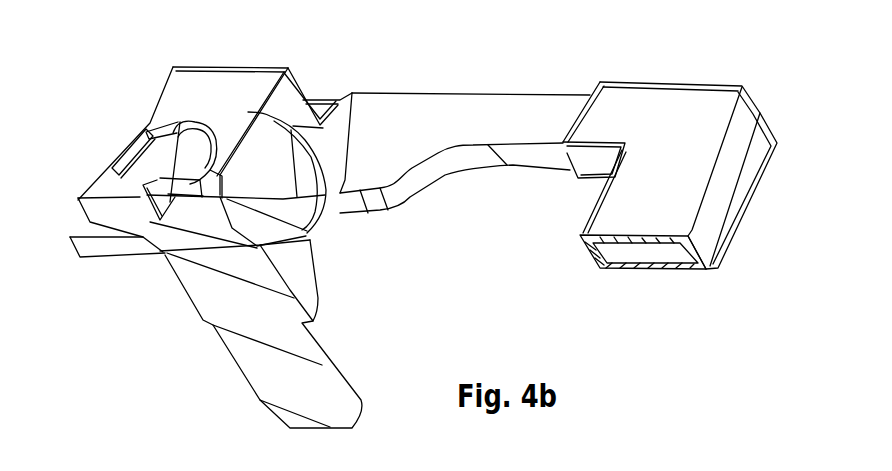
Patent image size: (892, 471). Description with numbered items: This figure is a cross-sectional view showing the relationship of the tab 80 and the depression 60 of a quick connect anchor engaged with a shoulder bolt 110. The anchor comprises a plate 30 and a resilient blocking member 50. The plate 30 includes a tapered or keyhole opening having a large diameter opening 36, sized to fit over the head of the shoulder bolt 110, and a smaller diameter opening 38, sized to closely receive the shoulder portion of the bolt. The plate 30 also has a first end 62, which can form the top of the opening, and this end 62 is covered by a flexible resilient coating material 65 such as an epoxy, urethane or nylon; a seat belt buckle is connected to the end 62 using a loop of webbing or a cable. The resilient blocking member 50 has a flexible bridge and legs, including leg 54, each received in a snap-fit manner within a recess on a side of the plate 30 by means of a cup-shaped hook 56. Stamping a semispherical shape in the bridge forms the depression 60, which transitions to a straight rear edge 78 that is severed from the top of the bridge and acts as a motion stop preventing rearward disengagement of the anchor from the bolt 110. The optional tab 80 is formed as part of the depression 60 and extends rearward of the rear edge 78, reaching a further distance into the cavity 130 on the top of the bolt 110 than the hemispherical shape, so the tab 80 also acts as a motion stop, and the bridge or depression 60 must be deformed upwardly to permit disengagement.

The plate 30 is at (414, 86).
The large diameter opening 36 is at (491, 143).
The smaller diameter opening 38 is at (352, 93).
The resilient blocking member 50 is at (157, 66).
The leg 54 is at (288, 66).
The cup-shaped hook 56 is at (321, 98).
The depression 60 is at (165, 257).
The first end 62 is at (652, 258).
The flexible resilient coating material 65 is at (638, 100).
The rear edge 78 is at (172, 145).
The tab 80 is at (125, 225).
The shoulder bolt 110 is at (90, 167).
The cavity 130 is at (158, 216).